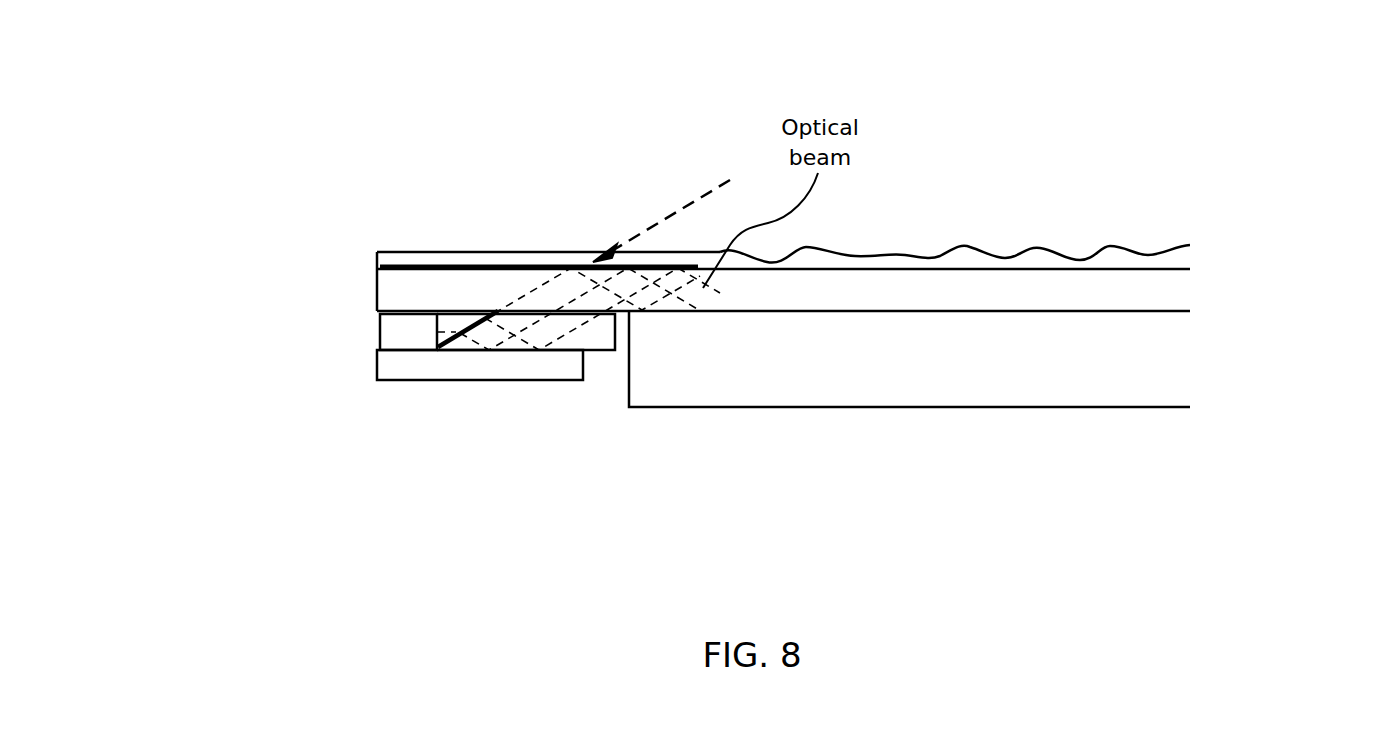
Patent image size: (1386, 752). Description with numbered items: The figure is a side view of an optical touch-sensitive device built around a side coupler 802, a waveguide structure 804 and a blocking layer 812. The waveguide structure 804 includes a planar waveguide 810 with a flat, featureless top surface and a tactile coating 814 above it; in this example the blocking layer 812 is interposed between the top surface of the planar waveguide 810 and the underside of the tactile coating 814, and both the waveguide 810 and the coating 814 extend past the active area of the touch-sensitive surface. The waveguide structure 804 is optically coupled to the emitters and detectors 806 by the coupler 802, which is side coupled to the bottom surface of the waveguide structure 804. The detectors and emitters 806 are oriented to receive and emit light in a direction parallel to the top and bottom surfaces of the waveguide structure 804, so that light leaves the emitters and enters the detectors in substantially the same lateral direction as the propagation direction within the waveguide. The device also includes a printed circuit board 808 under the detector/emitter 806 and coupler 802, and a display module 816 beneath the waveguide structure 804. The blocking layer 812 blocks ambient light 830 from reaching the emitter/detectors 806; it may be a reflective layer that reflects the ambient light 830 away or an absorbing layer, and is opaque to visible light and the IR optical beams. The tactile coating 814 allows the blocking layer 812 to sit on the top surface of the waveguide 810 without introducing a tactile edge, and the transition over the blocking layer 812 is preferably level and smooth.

The side coupler 802 is at (627, 483).
The waveguide structure 804 is at (860, 198).
The emitters and detectors 806 is at (378, 335).
The printed circuit board 808 is at (480, 365).
The planar waveguide 810 is at (783, 290).
The blocking layer 812 is at (469, 265).
The tactile coating 814 is at (950, 260).
The display module 816 is at (909, 359).
The ambient light 830 is at (677, 210).